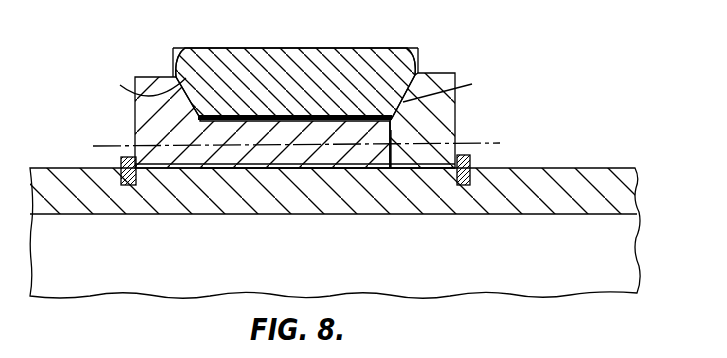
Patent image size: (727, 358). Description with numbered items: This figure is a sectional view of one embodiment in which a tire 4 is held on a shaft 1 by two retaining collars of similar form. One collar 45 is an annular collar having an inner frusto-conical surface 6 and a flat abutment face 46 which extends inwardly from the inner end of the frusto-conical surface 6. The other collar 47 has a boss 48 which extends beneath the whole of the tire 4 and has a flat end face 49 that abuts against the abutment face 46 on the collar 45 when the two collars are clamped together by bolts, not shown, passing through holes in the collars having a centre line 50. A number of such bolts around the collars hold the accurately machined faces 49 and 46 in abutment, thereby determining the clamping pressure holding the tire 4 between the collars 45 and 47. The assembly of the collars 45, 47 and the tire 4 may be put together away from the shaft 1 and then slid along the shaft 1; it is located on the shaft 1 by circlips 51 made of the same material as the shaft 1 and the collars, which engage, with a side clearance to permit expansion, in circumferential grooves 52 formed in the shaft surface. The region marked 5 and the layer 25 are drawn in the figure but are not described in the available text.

The shaft 1 is at (565, 178).
The tire 4 is at (315, 68).
The rounded chip edge 5 is at (197, 49).
The inner frusto-conical surface 6 is at (294, 81).
The contact layer 25 is at (262, 115).
The collar 45 is at (435, 85).
The flat abutment face 46 is at (398, 157).
The collar 47 is at (157, 85).
The boss 48 is at (270, 153).
The flat end face 49 is at (387, 134).
The centre line 50 is at (500, 143).
The circlips 51 is at (126, 157).
The circumferential grooves 52 is at (122, 175).